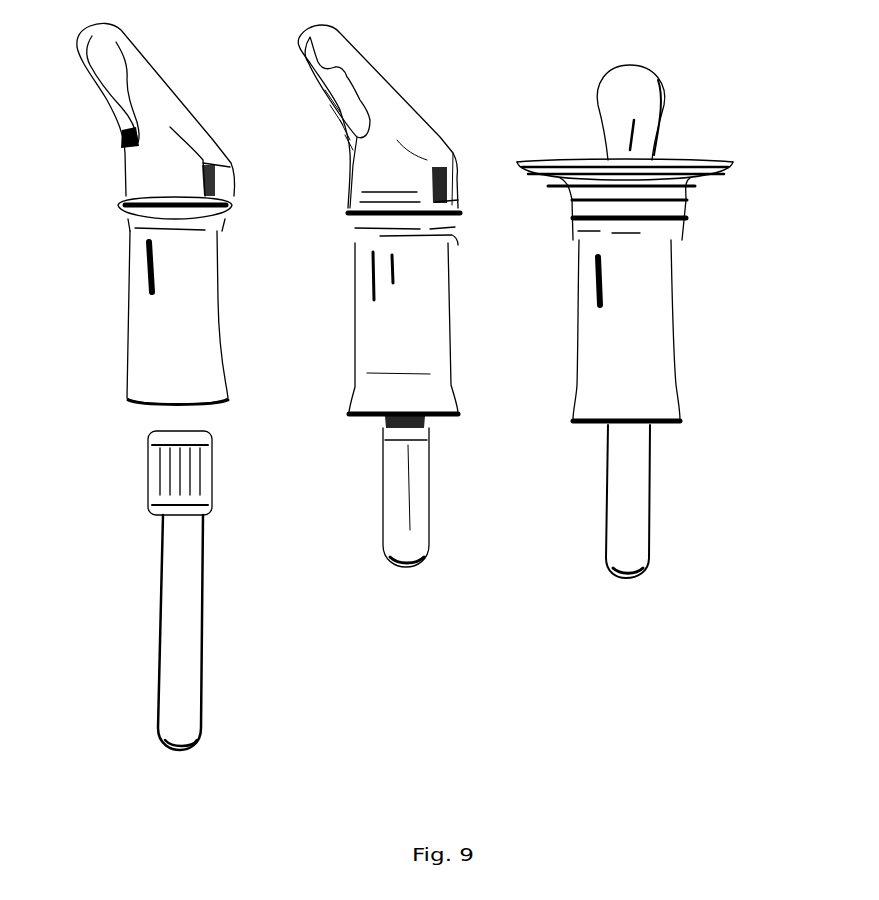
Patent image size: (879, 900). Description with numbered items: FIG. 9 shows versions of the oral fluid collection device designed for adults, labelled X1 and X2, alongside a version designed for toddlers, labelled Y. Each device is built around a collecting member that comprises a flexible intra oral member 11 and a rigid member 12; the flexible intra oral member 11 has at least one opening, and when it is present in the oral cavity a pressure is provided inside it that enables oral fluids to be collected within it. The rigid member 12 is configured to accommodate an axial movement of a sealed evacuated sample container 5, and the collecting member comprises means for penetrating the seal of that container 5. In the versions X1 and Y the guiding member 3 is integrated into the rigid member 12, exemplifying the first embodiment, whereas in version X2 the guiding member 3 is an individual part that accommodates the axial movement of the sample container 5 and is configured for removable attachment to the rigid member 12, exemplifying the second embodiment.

The guiding member 3 is at (410, 345).
The sealed evacuated sample container 5 is at (192, 604).
The flexible intra oral member 11 is at (549, 127).
The rigid member 12 is at (120, 308).
The adult version of the device according to embodiment I X1 is at (183, 131).
The adult version of the device according to embodiment II X2 is at (430, 476).
The toddler version of the device Y is at (653, 158).